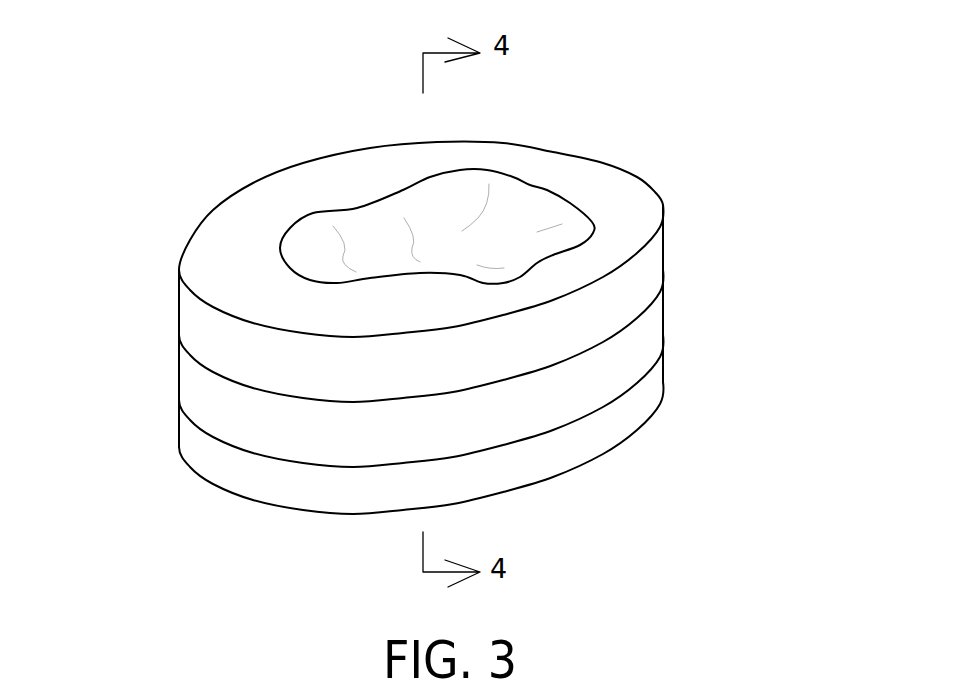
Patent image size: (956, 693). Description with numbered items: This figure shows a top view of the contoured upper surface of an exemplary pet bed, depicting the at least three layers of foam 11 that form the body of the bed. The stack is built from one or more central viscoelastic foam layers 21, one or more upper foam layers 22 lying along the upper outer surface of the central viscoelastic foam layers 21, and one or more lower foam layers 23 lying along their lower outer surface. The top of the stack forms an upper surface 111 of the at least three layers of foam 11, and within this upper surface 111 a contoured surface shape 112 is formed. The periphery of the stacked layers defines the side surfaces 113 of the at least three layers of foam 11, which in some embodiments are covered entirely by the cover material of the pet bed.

The at least three layers of foam 11 is at (437, 290).
The upper surface 111 is at (603, 178).
The contoured surface shape 112 is at (318, 238).
The side surfaces 113 is at (650, 267).
The central viscoelastic foam layer 21 is at (205, 402).
The upper foam layer 22 is at (391, 227).
The lower foam layer 23 is at (223, 473).